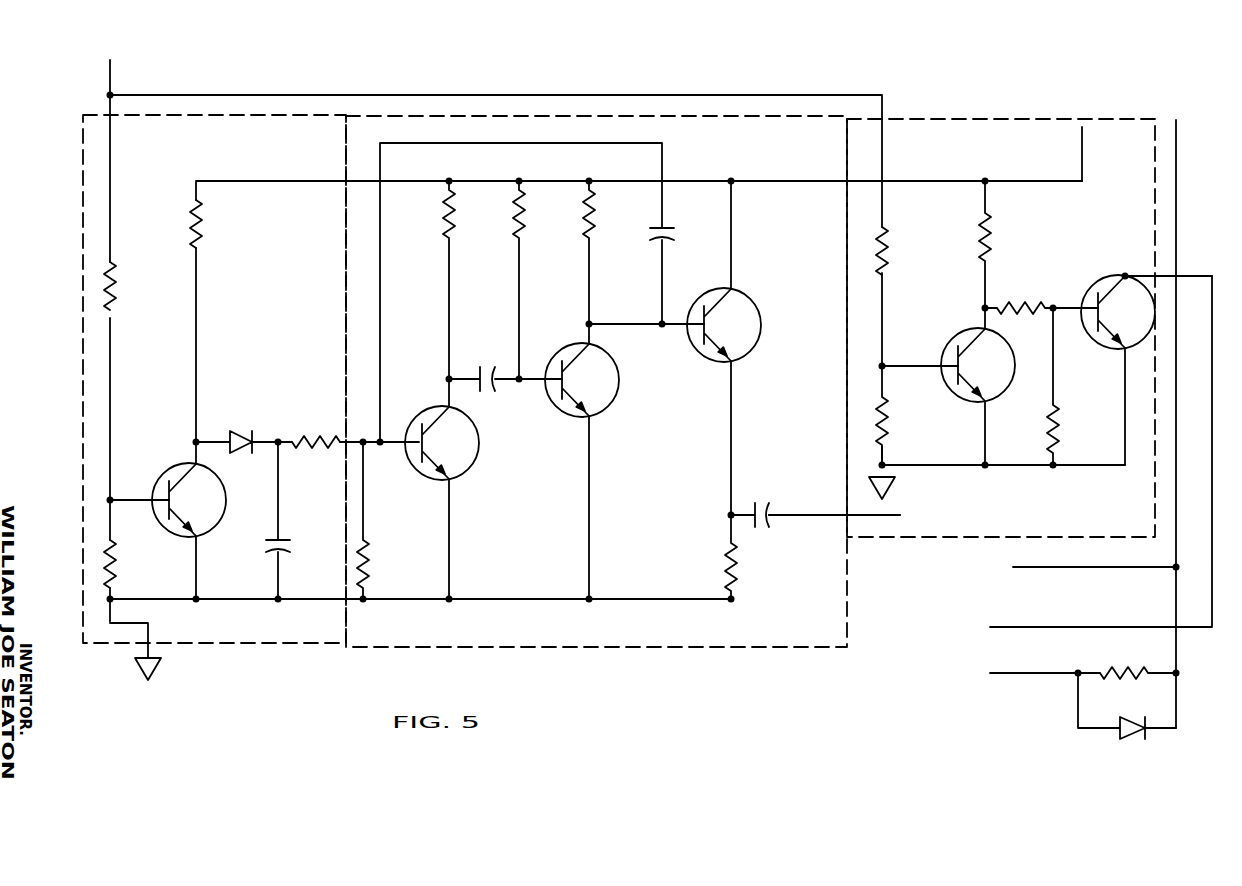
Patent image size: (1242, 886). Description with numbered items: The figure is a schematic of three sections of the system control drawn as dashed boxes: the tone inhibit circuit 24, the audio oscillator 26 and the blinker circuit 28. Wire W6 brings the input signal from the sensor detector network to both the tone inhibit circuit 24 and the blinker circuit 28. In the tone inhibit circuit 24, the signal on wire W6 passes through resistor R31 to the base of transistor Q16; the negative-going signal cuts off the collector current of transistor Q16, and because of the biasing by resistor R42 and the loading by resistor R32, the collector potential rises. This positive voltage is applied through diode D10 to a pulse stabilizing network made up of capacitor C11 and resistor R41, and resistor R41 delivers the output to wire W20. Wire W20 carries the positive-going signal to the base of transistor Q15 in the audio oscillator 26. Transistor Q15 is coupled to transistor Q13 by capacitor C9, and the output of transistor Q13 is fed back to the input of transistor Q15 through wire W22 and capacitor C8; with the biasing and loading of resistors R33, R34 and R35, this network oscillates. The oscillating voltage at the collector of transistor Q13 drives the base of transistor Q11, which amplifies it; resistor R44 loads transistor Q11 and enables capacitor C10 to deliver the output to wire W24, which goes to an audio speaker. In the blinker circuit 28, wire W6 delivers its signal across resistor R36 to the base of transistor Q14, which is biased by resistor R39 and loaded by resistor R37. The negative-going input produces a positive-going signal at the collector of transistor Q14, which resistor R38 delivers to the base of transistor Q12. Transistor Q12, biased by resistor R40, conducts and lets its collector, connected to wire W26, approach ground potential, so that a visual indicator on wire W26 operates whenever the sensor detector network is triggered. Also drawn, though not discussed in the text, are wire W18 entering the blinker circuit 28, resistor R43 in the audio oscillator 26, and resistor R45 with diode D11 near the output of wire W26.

The wire W6 is at (110, 85).
The conductor W18 is at (1082, 144).
The wire W20 is at (340, 437).
The wire W22 is at (666, 165).
The wire W24 is at (899, 514).
The wire W26 is at (1212, 473).
The resistor R31 is at (112, 292).
The resistor R32 is at (202, 223).
The resistor R33 is at (441, 232).
The resistor R34 is at (496, 217).
The resistor R35 is at (582, 221).
The resistor R36 is at (874, 252).
The resistor R37 is at (980, 229).
The resistor R38 is at (1010, 301).
The resistor R39 is at (872, 428).
The resistor R40 is at (1050, 433).
The resistor R41 is at (320, 437).
The resistor R42 is at (112, 554).
The resistor R43 is at (372, 558).
The resistor R44 is at (734, 562).
The resistor R45 is at (1128, 672).
The capacitor C8 is at (666, 240).
The capacitor C9 is at (504, 388).
The capacitor C10 is at (770, 510).
The capacitor C11 is at (284, 554).
The diode D10 is at (244, 433).
The diode D11 is at (1125, 726).
The transistor Q11 is at (754, 304).
The transistor Q12 is at (1123, 275).
The transistor Q13 is at (623, 382).
The transistor Q14 is at (948, 344).
The transistor Q15 is at (474, 458).
The transistor Q16 is at (206, 534).
The tone inhibit circuit 24 is at (63, 272).
The audio oscillator 26 is at (853, 610).
The blinker circuit 28 is at (1041, 112).